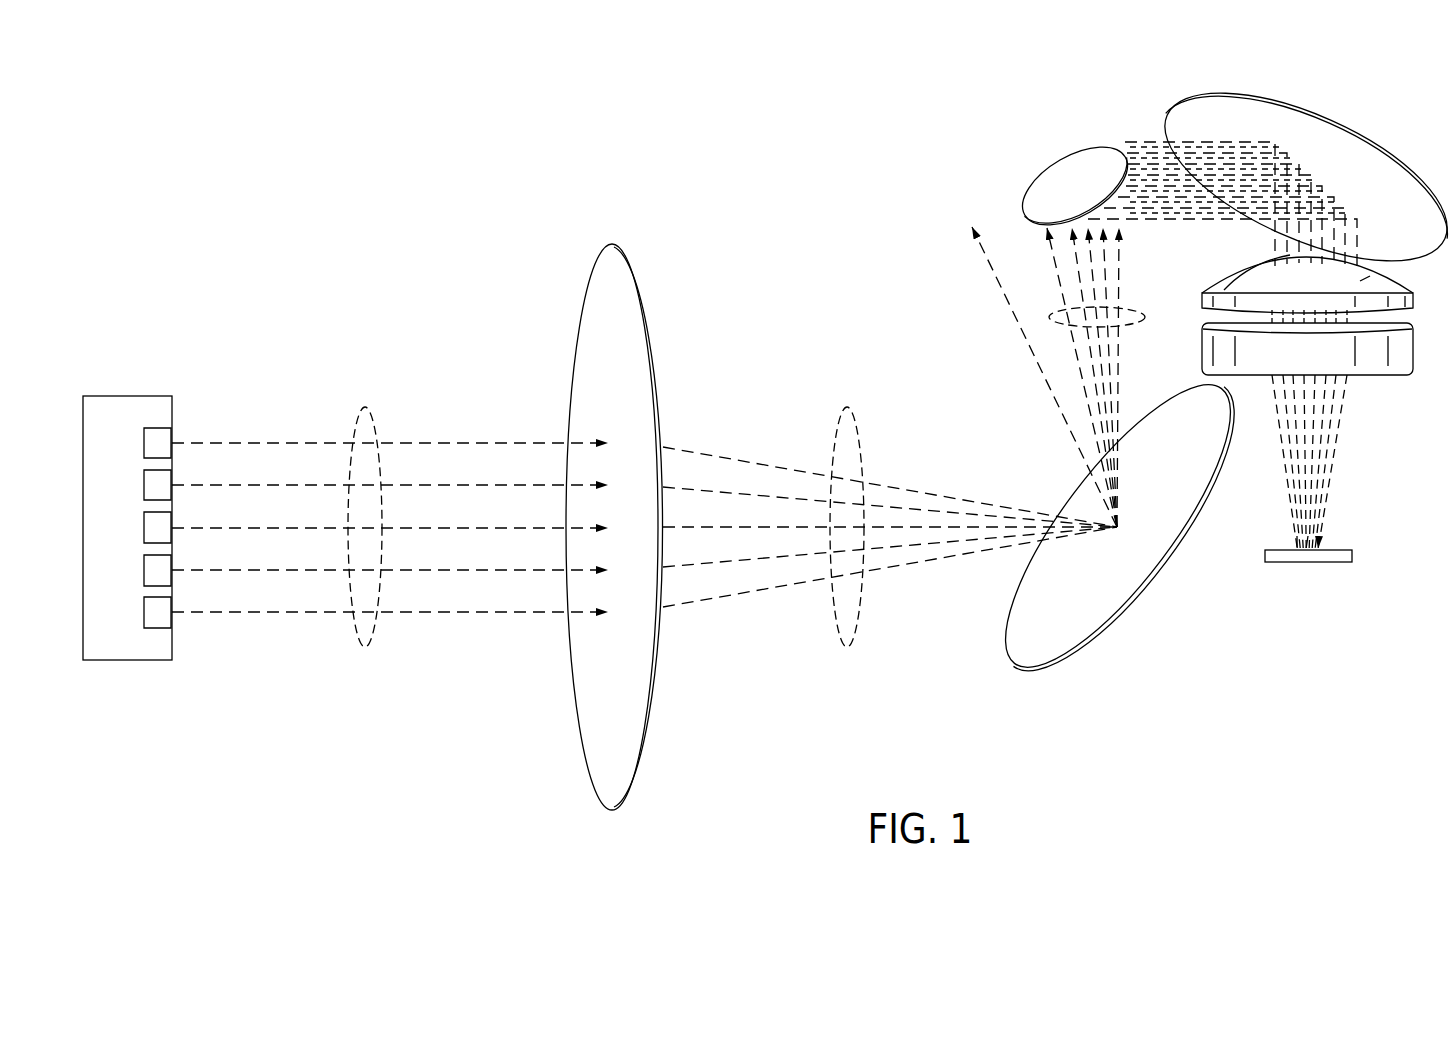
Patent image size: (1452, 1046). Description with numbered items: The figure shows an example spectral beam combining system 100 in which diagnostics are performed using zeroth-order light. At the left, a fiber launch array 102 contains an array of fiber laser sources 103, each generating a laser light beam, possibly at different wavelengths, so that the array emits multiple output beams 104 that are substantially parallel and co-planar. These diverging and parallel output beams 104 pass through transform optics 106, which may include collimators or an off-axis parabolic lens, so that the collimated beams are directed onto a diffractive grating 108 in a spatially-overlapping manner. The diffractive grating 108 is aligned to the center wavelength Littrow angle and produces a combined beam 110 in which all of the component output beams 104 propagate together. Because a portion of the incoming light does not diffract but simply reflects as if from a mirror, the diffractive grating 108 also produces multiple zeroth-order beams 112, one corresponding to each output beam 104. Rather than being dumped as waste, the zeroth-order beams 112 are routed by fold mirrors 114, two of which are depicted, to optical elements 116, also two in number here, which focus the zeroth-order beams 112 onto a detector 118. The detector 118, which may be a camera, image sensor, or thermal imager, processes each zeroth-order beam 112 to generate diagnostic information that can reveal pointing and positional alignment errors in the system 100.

The spectral beam combining system 100 is at (631, 143).
The fiber launch array 102 is at (128, 661).
The fiber laser source 103 is at (162, 618).
The output beam 104 is at (365, 647).
The transform optics 106 is at (580, 742).
The diffractive grating 108 is at (1106, 612).
The combined beam 110 is at (1058, 407).
The zeroth-order beam 112 is at (1142, 318).
The fold mirror 114 is at (1063, 158).
The optical element 116 is at (1223, 286).
The detector 118 is at (1308, 563).